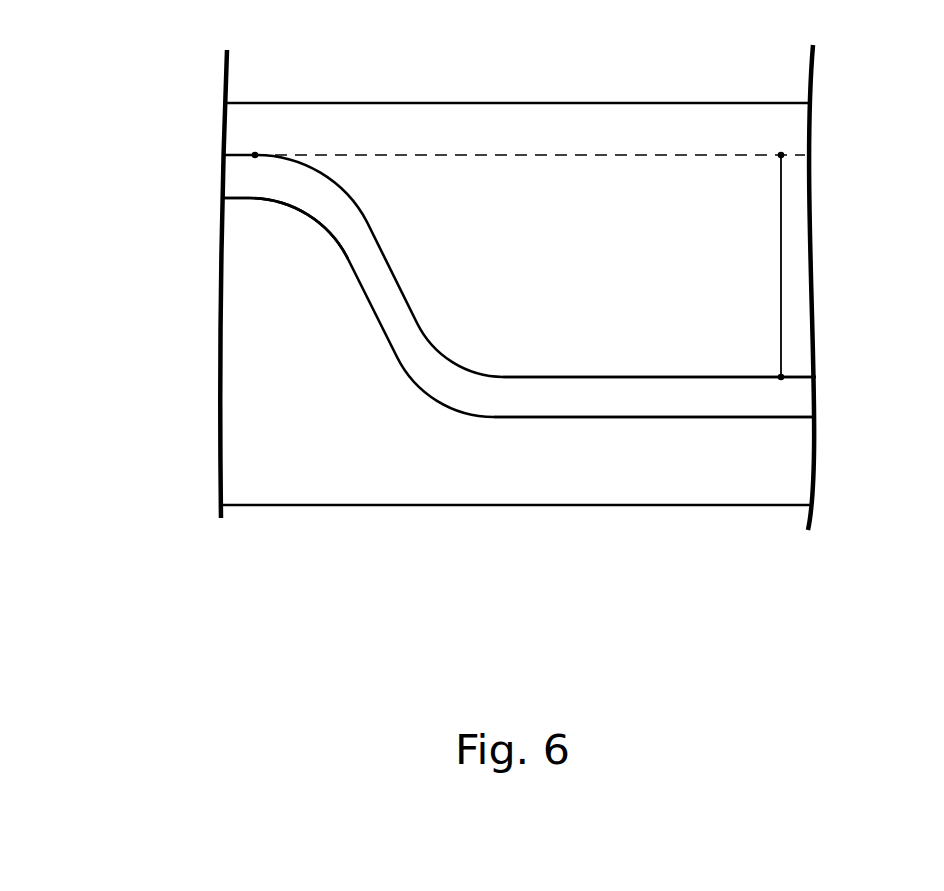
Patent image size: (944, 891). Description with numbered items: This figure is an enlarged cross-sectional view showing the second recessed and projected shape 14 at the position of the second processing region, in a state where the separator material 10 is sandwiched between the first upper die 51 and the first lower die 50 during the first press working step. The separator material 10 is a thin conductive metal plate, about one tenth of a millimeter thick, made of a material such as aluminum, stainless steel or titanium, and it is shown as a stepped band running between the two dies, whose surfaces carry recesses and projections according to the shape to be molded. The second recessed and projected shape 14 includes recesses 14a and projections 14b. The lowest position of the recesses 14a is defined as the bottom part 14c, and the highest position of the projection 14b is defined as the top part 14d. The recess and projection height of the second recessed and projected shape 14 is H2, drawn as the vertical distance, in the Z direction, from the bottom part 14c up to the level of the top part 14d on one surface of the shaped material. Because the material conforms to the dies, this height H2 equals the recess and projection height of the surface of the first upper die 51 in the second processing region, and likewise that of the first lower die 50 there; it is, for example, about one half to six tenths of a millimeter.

The second recessed and projected shape 14 is at (107, 38).
The recesses 14a is at (683, 395).
The projections 14b is at (244, 187).
The bottom part 14c is at (781, 380).
The top part 14d is at (255, 152).
The separator material 10 is at (228, 178).
The first lower die 50 is at (362, 495).
The first upper die 51 is at (692, 125).
The recess and projection height H2 is at (767, 264).